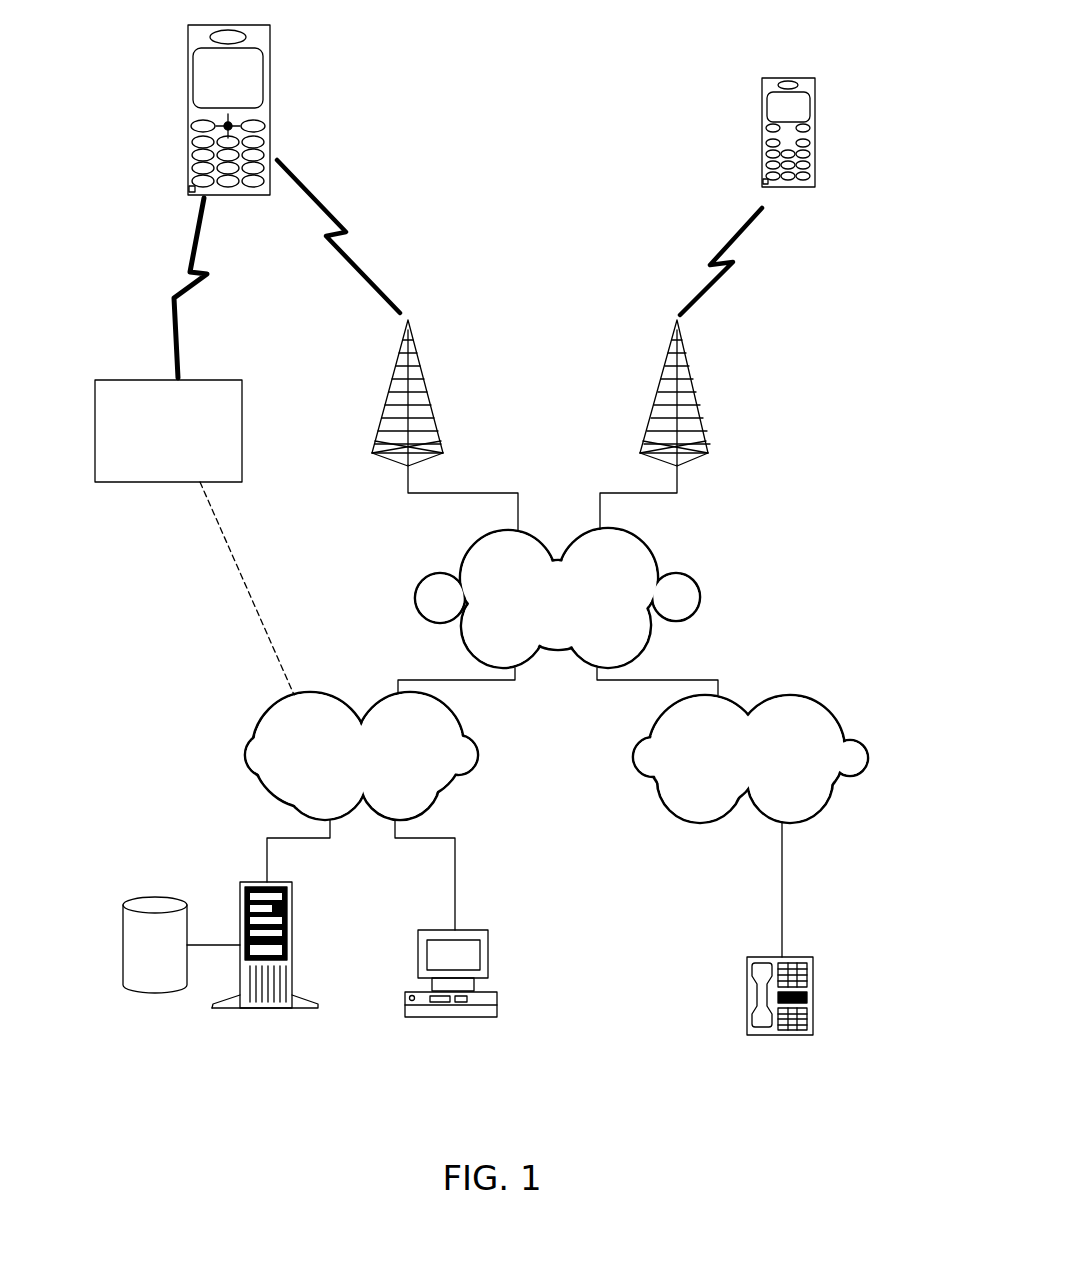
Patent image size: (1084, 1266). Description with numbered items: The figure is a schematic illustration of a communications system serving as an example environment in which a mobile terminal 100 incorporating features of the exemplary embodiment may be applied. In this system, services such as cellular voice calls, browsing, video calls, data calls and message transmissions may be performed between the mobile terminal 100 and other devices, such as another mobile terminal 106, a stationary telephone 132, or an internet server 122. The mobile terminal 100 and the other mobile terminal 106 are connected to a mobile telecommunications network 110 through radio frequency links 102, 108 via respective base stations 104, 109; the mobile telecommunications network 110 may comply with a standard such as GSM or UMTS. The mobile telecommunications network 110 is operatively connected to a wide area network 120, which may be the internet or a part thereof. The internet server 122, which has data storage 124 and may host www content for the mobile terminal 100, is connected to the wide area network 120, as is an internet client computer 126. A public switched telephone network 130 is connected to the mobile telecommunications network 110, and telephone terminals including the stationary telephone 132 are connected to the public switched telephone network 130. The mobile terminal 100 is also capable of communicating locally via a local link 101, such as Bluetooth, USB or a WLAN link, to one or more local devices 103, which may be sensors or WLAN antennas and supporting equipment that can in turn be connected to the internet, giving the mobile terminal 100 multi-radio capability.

The mobile terminal 100 is at (182, 125).
The local link 101 is at (170, 287).
The radio frequency link 102 is at (343, 222).
The local devices 103 is at (128, 480).
The base station 104 is at (410, 397).
The mobile terminal 106 is at (775, 78).
The radio frequency link 108 is at (703, 253).
The base station 109 is at (663, 370).
The mobile telecommunications network 110 is at (417, 587).
The wide area network 120 is at (263, 728).
The internet server 122 is at (238, 917).
The data storage 124 is at (148, 900).
The internet client computer 126 is at (473, 930).
The public switched telephone network 130 is at (867, 758).
The stationary telephone 132 is at (747, 977).